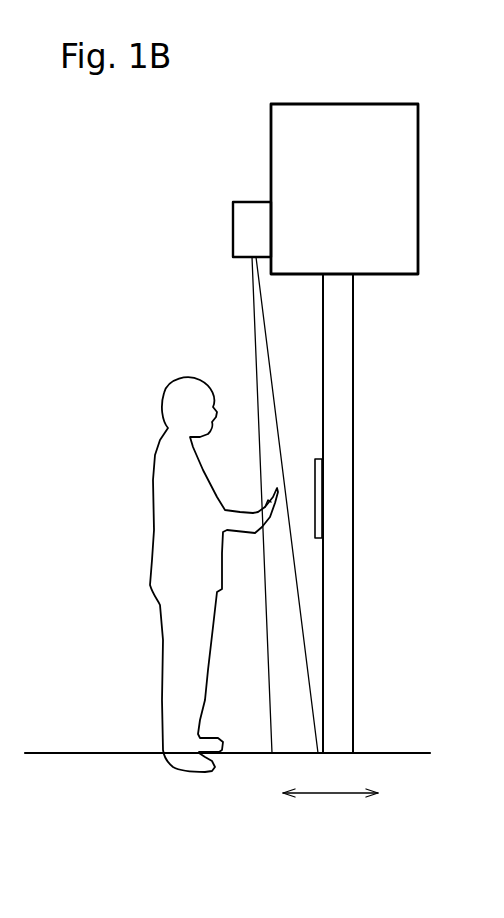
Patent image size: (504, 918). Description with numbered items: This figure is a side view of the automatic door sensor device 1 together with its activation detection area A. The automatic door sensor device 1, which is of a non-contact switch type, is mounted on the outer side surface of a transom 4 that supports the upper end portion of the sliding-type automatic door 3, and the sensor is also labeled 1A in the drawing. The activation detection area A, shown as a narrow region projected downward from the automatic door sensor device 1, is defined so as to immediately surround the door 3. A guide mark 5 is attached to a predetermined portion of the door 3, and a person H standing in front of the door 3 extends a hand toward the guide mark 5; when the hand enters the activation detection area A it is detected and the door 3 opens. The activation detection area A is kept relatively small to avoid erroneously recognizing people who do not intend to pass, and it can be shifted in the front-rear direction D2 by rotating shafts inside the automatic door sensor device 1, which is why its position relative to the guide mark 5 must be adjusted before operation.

The automatic door sensor device 1 is at (228, 191).
The sensor (first type) 1A is at (248, 201).
The automatic door 3 is at (342, 622).
The transom 4 is at (419, 213).
The guide mark 5 is at (315, 477).
The activation detection area A is at (282, 713).
The person H is at (160, 689).
The front-rear direction D2 is at (330, 795).